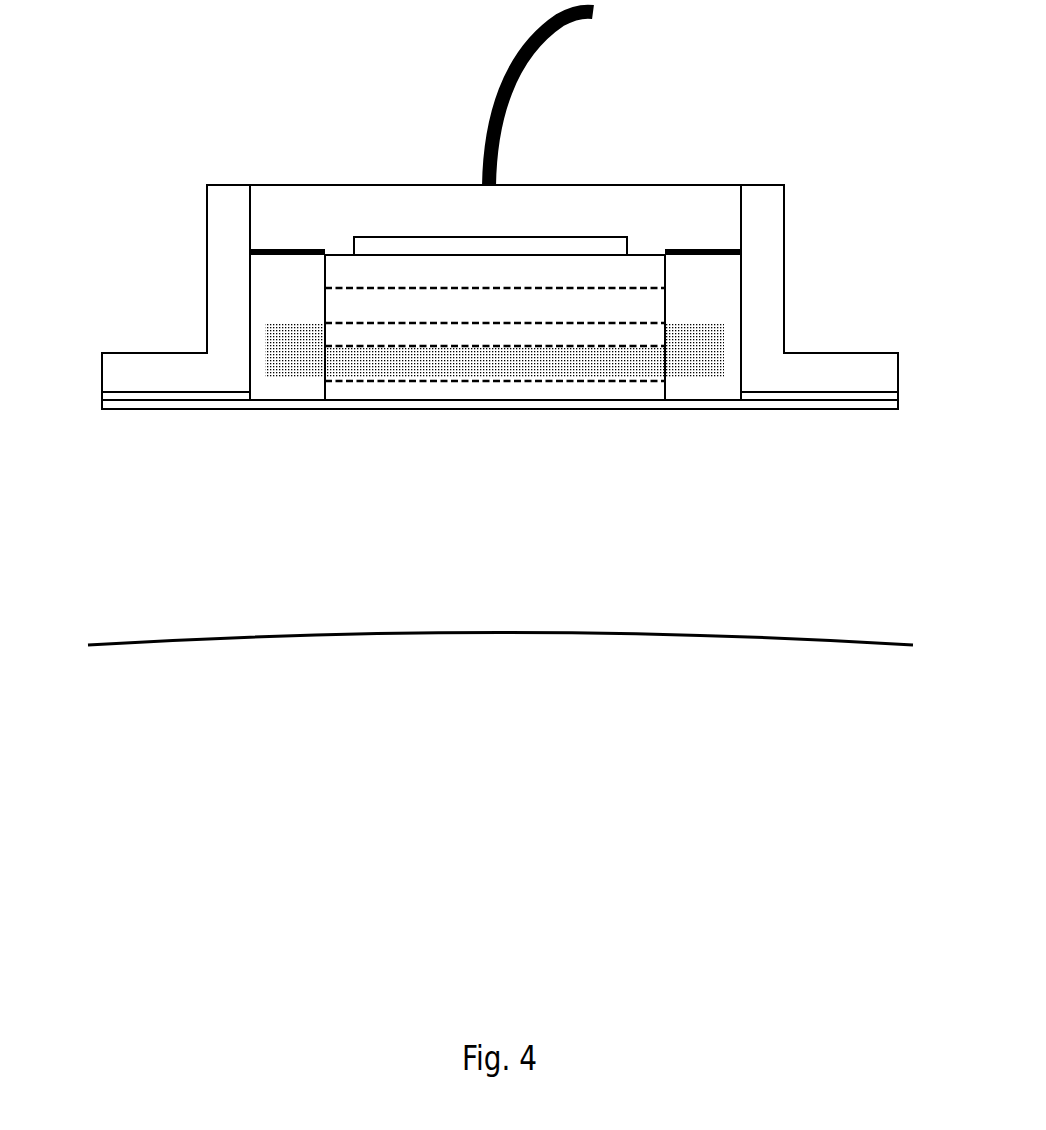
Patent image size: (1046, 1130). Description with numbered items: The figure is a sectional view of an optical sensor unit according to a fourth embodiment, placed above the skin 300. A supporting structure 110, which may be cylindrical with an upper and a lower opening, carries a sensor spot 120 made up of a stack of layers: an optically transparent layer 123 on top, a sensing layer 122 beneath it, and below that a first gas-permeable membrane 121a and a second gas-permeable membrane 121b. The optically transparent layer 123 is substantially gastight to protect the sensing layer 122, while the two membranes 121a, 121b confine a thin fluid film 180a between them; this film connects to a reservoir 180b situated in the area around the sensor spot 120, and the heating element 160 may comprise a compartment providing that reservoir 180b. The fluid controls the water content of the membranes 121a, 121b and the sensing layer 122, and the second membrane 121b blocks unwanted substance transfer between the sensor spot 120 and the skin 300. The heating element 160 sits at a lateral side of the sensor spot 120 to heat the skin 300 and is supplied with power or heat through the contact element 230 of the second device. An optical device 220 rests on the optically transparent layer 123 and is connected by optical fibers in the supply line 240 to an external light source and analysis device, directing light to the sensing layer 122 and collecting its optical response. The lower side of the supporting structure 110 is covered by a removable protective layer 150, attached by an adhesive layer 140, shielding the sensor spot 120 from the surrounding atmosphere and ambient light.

The supporting structure 110 is at (767, 210).
The sensor spot 120 is at (491, 399).
The first gas-permeable membrane 121a is at (571, 331).
The second gas-permeable membrane 121b is at (372, 390).
The sensing layer 122 is at (448, 308).
The optically transparent layer 123 is at (508, 275).
The adhesive layer 140 is at (120, 397).
The removable protective layer 150 is at (198, 408).
The heating element 160 is at (268, 297).
The fluid film 180a is at (627, 361).
The reservoir 180b is at (284, 367).
The optical device 220 is at (549, 250).
The contact element 230 is at (250, 253).
The supply line 240 is at (508, 52).
The skin 300 is at (188, 638).